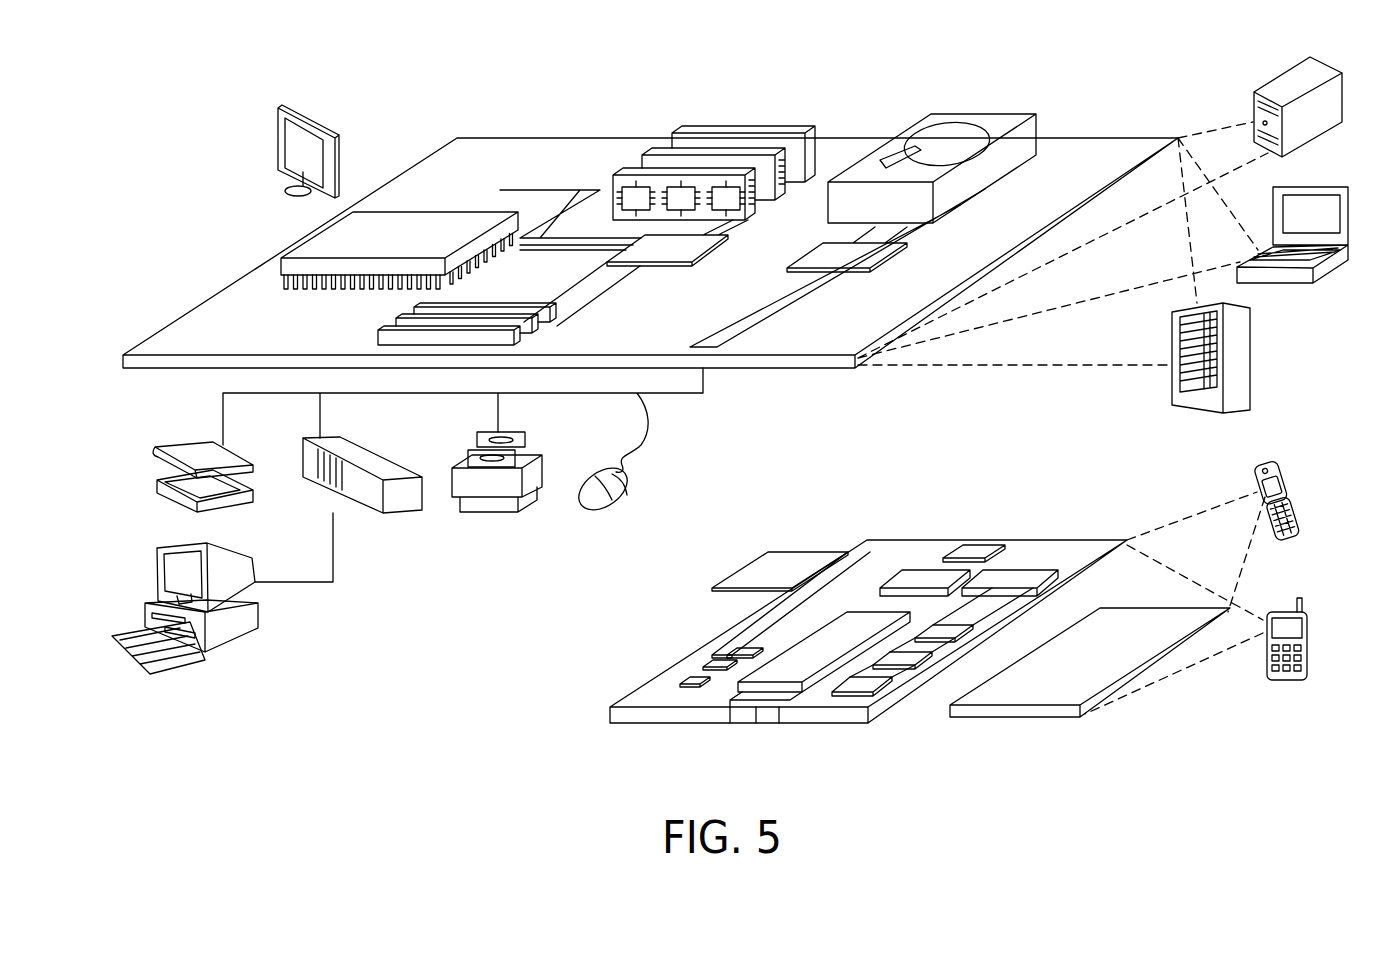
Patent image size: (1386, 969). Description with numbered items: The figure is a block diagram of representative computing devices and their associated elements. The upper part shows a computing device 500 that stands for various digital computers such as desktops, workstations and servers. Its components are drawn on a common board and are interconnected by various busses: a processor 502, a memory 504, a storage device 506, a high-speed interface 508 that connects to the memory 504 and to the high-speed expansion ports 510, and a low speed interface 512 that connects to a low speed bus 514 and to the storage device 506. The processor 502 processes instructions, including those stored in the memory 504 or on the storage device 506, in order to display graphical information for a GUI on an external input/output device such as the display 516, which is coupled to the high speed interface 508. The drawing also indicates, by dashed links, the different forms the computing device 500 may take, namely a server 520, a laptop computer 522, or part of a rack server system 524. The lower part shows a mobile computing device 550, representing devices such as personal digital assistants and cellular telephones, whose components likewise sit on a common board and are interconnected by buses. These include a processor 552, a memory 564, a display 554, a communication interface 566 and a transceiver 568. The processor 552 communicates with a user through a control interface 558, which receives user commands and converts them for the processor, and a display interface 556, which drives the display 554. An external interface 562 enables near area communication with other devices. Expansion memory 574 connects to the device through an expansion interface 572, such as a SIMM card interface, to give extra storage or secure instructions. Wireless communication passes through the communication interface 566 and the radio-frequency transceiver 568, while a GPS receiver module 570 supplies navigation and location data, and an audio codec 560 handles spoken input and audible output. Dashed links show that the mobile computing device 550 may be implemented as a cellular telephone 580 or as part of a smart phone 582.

The computing device 500 is at (413, 92).
The processor 502 is at (305, 243).
The memory 504 is at (746, 131).
The storage device 506 is at (976, 113).
The high-speed interface 508 is at (678, 245).
The high-speed expansion ports 510 is at (403, 317).
The low speed interface 512 is at (821, 250).
The low speed bus 514 is at (707, 347).
The display 516 is at (280, 106).
The server 520 is at (1275, 86).
The laptop computer 522 is at (1331, 185).
The rack server system 524 is at (1252, 357).
The computing device 550 is at (566, 727).
The processor 552 is at (793, 658).
The display 554 is at (1127, 627).
The display interface 556 is at (887, 680).
The control interface 558 is at (907, 657).
The audio codec 560 is at (947, 623).
The external interface 562 is at (757, 700).
The memory 564 is at (710, 662).
The communication interface 566 is at (923, 572).
The transceiver 568 is at (1015, 572).
The GPS receiver module 570 is at (978, 548).
The expansion interface 572 is at (849, 550).
The expansion memory 574 is at (768, 552).
The cellular telephone 580 is at (1273, 465).
The smart phone 582 is at (1282, 612).